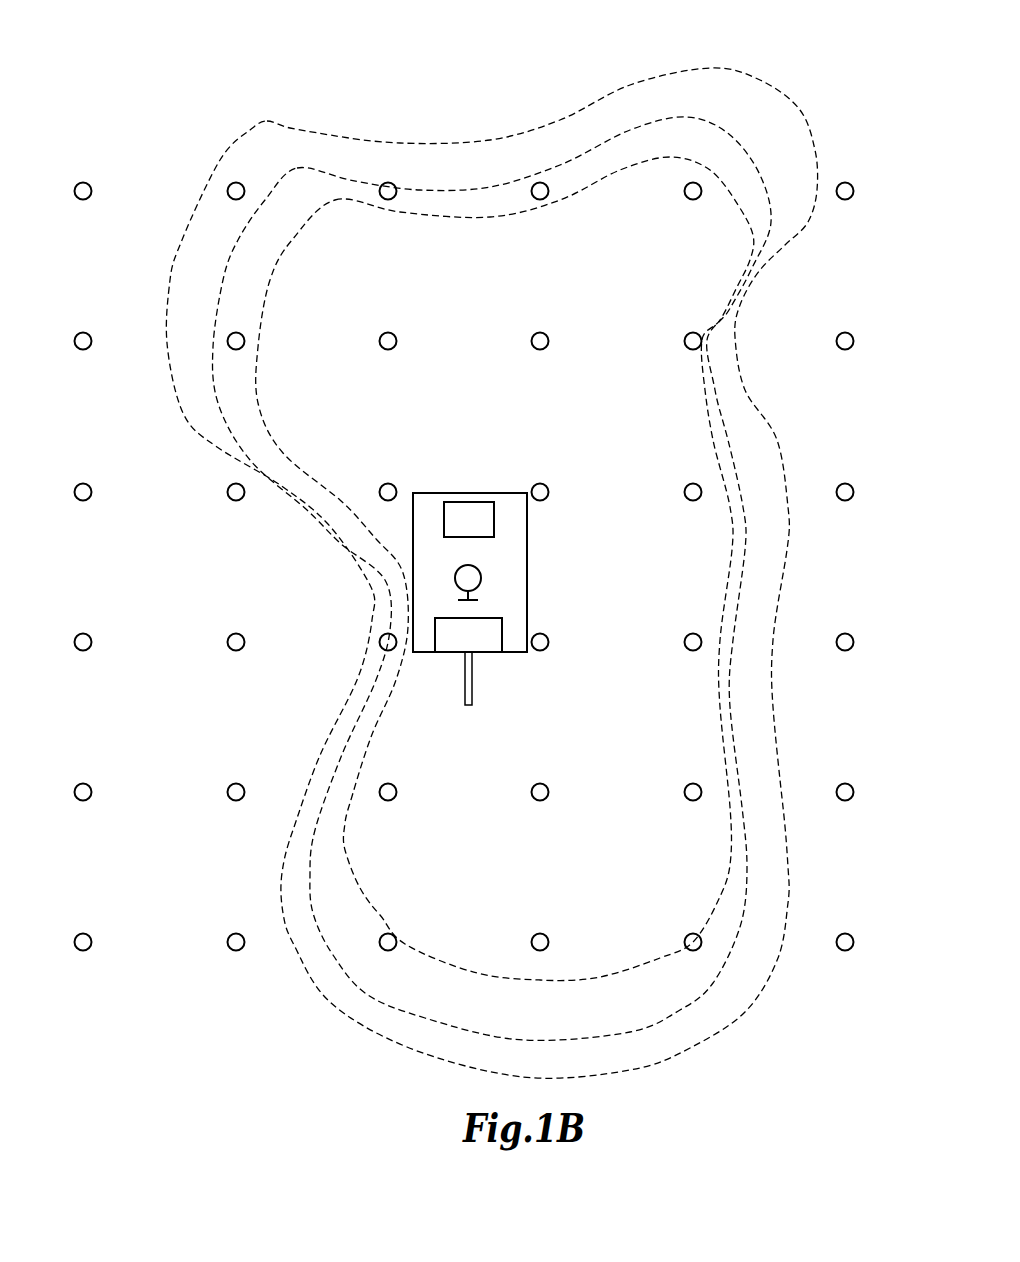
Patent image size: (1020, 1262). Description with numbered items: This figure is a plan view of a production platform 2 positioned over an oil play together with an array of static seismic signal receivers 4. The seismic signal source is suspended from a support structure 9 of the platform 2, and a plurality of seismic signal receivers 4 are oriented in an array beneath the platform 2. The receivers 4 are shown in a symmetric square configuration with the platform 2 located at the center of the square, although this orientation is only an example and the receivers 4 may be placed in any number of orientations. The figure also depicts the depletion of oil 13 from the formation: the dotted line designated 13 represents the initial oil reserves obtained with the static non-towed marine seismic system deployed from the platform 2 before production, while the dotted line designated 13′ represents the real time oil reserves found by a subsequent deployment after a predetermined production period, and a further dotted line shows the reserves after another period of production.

The platform 2 is at (487, 493).
The seismic signal receivers 4 is at (845, 332).
The support structure 9 is at (473, 682).
The oil 13 is at (780, 97).
The oil reserves 13′ is at (667, 117).